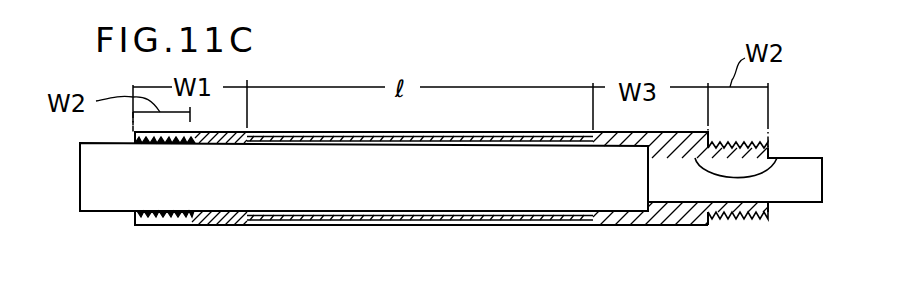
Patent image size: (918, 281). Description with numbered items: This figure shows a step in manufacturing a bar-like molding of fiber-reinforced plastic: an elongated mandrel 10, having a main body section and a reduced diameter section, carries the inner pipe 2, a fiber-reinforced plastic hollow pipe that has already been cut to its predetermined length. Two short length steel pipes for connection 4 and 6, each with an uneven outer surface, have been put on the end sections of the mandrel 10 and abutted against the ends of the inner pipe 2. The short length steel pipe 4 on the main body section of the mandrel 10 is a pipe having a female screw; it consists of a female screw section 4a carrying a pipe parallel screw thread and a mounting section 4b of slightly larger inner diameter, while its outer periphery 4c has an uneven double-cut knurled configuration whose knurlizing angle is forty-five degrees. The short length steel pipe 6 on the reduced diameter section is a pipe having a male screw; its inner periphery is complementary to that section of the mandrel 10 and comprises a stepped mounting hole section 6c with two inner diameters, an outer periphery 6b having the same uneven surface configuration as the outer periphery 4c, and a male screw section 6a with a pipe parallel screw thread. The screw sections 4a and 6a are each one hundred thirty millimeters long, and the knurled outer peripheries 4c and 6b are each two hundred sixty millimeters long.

The mandrel 10 is at (115, 190).
The short length steel pipe for connection 4 is at (210, 218).
The female screw section 4a is at (155, 212).
The mounting section 4b is at (233, 211).
The outer periphery 4c is at (232, 222).
The inner pipe 2 is at (505, 132).
The short length steel pipe for connection 6 is at (682, 215).
The male screw section 6a is at (740, 222).
The outer periphery 6b is at (618, 226).
The stepped mounting hole section 6c is at (783, 158).